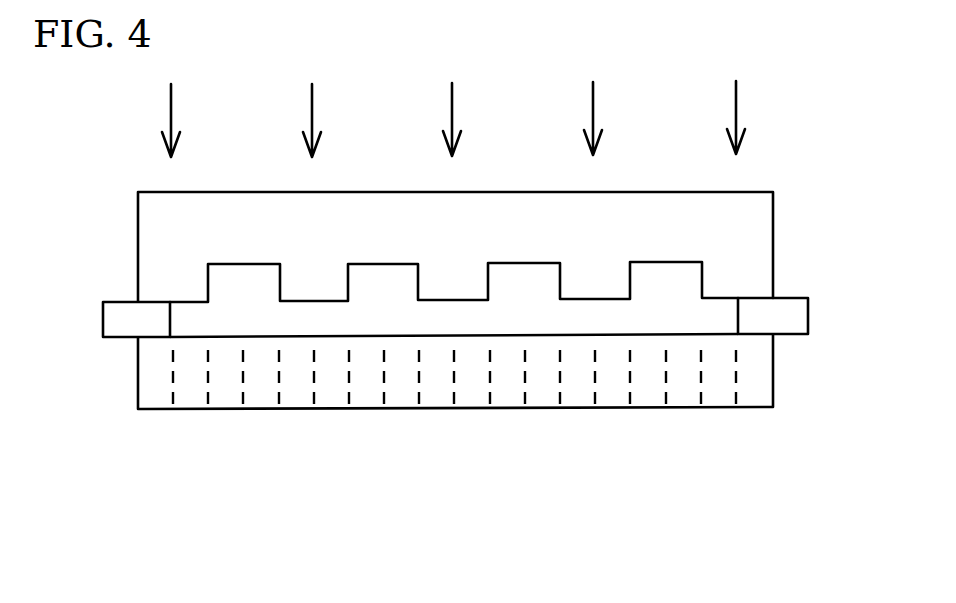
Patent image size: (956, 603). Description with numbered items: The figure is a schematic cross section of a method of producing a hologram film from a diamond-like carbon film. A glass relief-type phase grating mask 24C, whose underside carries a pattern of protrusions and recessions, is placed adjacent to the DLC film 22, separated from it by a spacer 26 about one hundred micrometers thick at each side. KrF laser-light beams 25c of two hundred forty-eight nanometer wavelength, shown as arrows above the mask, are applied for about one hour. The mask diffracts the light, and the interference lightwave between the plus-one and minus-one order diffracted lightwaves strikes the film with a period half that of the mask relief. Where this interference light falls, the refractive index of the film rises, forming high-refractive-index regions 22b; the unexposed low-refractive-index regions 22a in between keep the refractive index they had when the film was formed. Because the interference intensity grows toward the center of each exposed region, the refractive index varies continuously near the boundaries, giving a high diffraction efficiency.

The DLC film 22 is at (493, 430).
The low-refractive-index region 22a is at (400, 392).
The high-refractive-index region 22b is at (440, 392).
The relief-type phase grating mask 24C is at (760, 215).
The KrF laser-light beams 25c is at (747, 108).
The spacer 26 is at (118, 317).